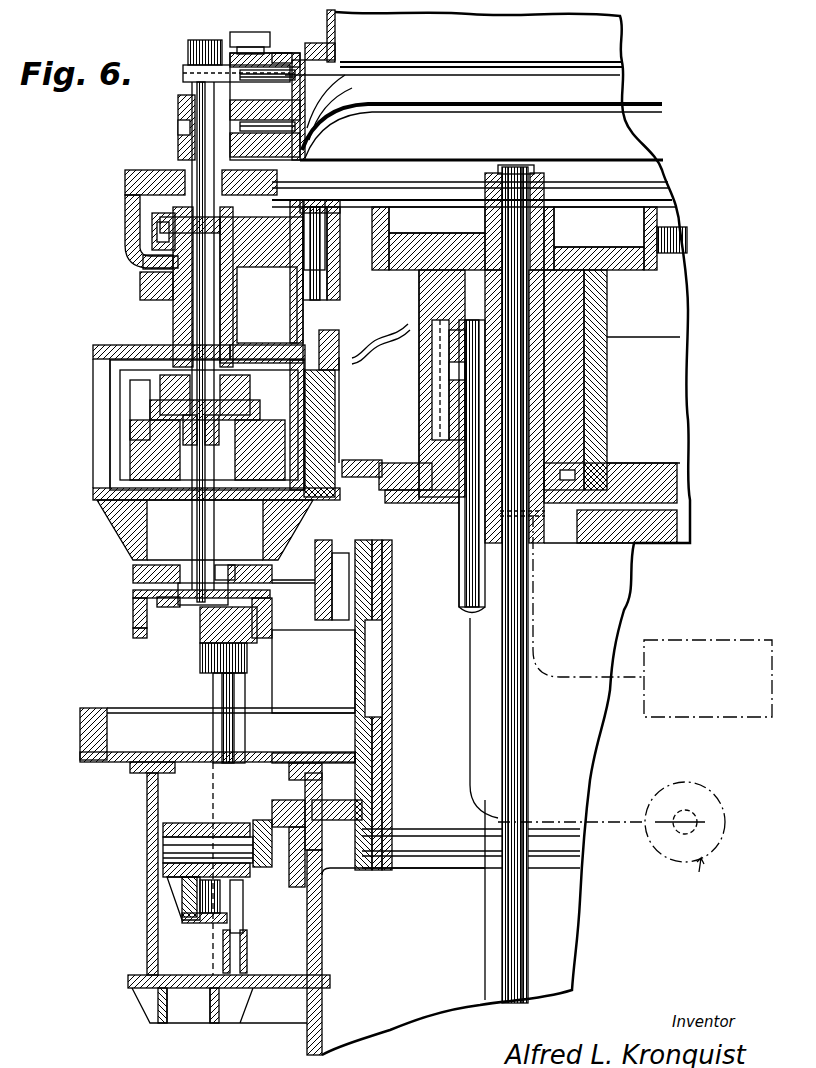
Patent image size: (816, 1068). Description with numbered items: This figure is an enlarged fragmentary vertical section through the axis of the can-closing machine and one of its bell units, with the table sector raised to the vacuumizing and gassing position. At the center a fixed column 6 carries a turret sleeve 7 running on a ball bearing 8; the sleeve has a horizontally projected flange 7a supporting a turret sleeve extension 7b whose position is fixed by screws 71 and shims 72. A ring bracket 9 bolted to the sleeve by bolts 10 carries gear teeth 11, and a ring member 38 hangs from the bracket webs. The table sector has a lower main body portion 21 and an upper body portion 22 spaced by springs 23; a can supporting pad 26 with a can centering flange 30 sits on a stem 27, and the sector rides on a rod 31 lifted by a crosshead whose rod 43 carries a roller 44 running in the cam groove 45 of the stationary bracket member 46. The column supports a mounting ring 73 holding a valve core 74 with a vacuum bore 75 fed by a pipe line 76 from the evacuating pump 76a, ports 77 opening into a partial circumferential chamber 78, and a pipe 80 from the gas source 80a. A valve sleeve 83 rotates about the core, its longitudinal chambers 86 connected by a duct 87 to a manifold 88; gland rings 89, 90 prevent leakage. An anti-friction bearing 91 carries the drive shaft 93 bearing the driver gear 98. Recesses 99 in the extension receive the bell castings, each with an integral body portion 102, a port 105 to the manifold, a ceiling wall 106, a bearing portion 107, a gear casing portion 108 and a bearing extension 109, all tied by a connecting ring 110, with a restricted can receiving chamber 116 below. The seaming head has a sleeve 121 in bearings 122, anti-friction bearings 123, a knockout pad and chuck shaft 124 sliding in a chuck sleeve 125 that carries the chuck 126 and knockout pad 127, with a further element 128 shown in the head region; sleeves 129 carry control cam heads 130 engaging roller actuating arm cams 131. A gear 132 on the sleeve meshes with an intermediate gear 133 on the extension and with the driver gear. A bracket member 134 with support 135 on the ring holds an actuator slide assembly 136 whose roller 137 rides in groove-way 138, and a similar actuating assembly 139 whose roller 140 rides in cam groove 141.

The column 6 is at (392, 657).
The turret sleeve 7 is at (378, 700).
The horizontally projected flange 7a is at (313, 671).
The turret sleeve extension 7b is at (337, 420).
The ball bearing 8 is at (385, 780).
The ring bracket 9 is at (217, 735).
The bolts 10 is at (313, 753).
The gear teeth 11 is at (80, 737).
The lower main body portion 21 is at (133, 612).
The upper body portion 22 is at (135, 605).
The springs 23 is at (133, 632).
The can supporting pad 26 is at (200, 580).
The stem 27 is at (187, 608).
The can centering flange 30 is at (224, 565).
The rod 31 is at (222, 693).
The ring member 38 is at (150, 1005).
The rod 43 is at (160, 858).
The roller 44 is at (225, 925).
The cam groove 45 is at (279, 840).
The bracket member 46 is at (325, 870).
The screws 71 is at (335, 590).
The shims 72 is at (318, 578).
The mounting ring 73 is at (398, 535).
The valve core 74 is at (575, 367).
The vacuum bore 75 is at (470, 357).
The pipe line 76 is at (454, 569).
The evacuating pump 76a is at (714, 808).
The ports 77 is at (418, 332).
The partial circumferential chamber 78 is at (452, 383).
The pipe 80 is at (540, 575).
The source of gas supply 80a is at (736, 644).
The valve sleeve 83 is at (598, 413).
The longitudinal chambers 86 is at (448, 373).
The duct 87 is at (385, 328).
The manifold 88 is at (350, 362).
The gland ring 89 is at (352, 480).
The gland ring 90 is at (415, 260).
The anti-friction bearing 91 is at (556, 255).
The drive shaft 93 is at (522, 740).
The driver gear 98 is at (660, 267).
The recesses 99 is at (462, 583).
The integral body portion 102 is at (303, 285).
The port 105 is at (250, 338).
The ceiling wall 106 is at (117, 347).
The bearing portion 107 is at (168, 300).
The gear casing portion 108 is at (150, 237).
The bearing extension 109 is at (303, 305).
The connecting ring 110 is at (127, 170).
The can receiving chamber 116 is at (135, 570).
The sleeve 121 is at (165, 272).
The bearings 122 is at (303, 322).
The anti-friction bearings 123 is at (175, 437).
The knockout pad and chuck shaft 124 is at (200, 413).
The chuck sleeve 125 is at (180, 445).
The chuck 126 is at (105, 512).
The knockout pad 127 is at (133, 540).
The plate 128 is at (120, 485).
The sleeves 129 is at (174, 320).
The control cam heads 130 is at (122, 380).
The roller actuating arm cams 131 is at (148, 400).
The gear 132 is at (133, 212).
The intermediate gear 133 is at (349, 222).
The bracket member 134 is at (183, 102).
The support 135 is at (236, 38).
The actuator slide assembly 136 is at (338, 147).
The roller 137 is at (482, 119).
The groove-way 138 is at (318, 90).
The actuating assembly 139 is at (283, 52).
The roller 140 is at (340, 55).
The cam groove 141 is at (345, 64).